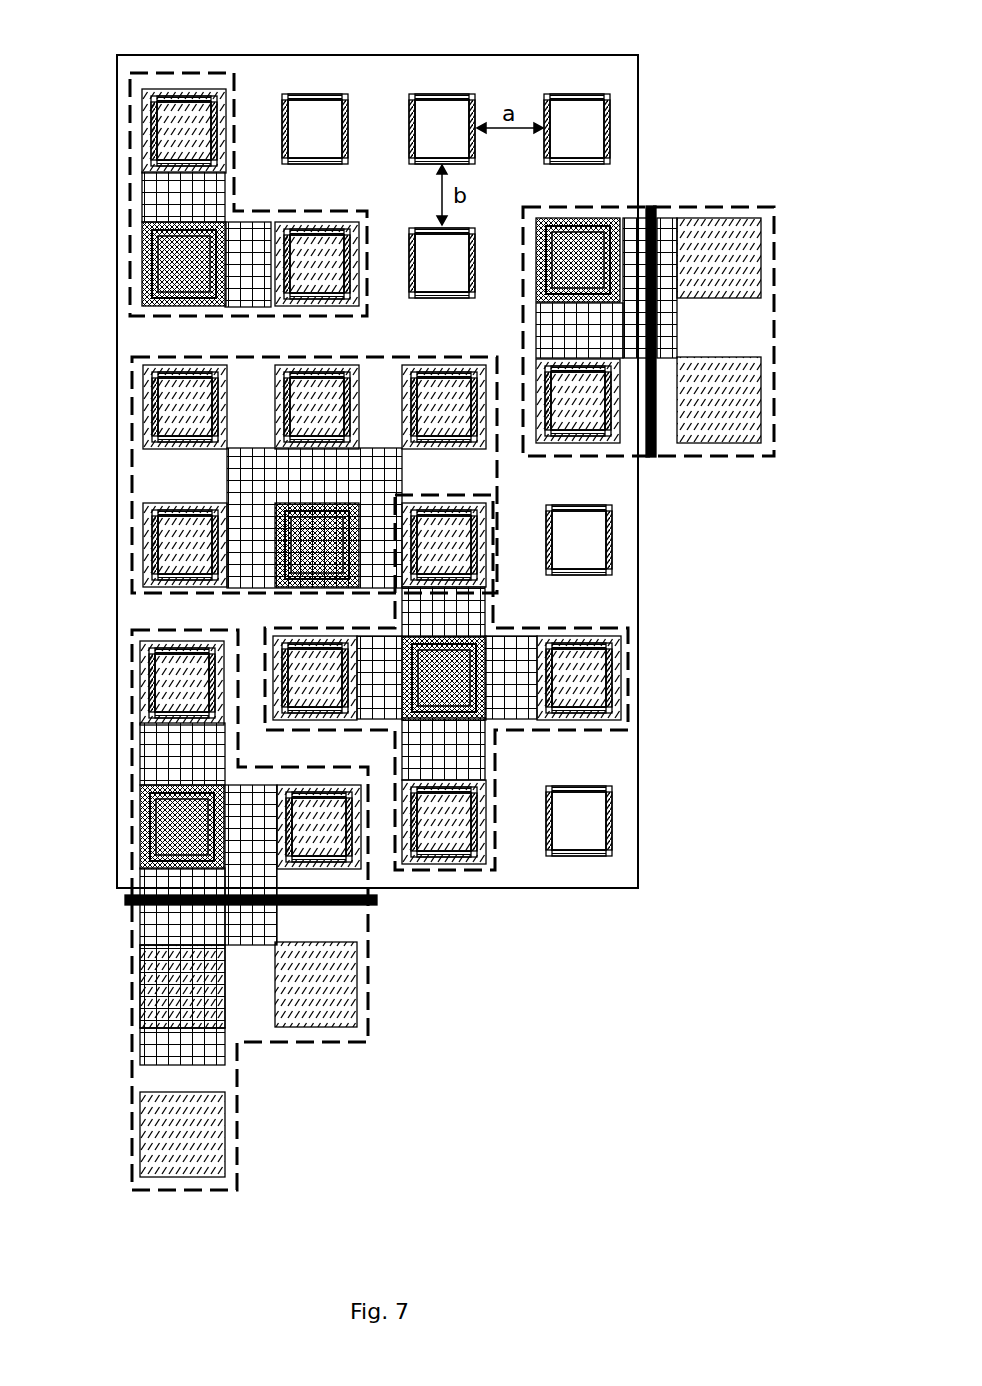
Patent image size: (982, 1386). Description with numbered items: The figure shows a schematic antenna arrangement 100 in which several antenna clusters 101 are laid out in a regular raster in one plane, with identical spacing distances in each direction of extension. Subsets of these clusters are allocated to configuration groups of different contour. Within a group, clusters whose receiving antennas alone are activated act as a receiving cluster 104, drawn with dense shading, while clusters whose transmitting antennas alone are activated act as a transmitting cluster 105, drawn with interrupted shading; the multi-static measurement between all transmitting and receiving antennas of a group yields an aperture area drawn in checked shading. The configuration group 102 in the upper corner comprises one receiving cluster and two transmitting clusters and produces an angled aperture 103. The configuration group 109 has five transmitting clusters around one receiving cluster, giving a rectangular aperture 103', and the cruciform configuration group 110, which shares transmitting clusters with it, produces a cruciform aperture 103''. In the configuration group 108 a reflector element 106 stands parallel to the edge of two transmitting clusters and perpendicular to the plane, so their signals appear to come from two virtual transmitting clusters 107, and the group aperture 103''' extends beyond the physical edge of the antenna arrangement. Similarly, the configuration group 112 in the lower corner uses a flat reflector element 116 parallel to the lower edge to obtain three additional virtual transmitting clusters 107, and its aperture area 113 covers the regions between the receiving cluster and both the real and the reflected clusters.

The antenna arrangement 100 is at (640, 68).
The antenna cluster 101 is at (443, 93).
The configuration group 102 is at (130, 118).
The angled aperture 103 is at (162, 238).
The rectangular aperture 103' is at (281, 518).
The cruciform aperture 103'' is at (467, 683).
The group aperture 103''' is at (643, 288).
The receiving cluster 104 is at (153, 268).
The transmitting cluster 105 is at (210, 100).
The reflector element 106 is at (654, 457).
The virtual transmitting cluster 107 is at (759, 274).
The configuration group 108 is at (733, 203).
The configuration group 109 is at (130, 465).
The cruciform configuration group 110 is at (481, 871).
The configuration group 112 is at (368, 983).
The aperture area 113 is at (150, 760).
The reflector element 116 is at (368, 905).